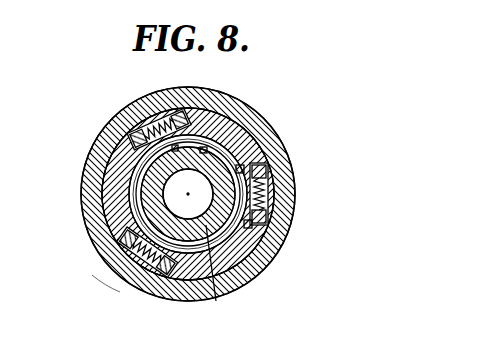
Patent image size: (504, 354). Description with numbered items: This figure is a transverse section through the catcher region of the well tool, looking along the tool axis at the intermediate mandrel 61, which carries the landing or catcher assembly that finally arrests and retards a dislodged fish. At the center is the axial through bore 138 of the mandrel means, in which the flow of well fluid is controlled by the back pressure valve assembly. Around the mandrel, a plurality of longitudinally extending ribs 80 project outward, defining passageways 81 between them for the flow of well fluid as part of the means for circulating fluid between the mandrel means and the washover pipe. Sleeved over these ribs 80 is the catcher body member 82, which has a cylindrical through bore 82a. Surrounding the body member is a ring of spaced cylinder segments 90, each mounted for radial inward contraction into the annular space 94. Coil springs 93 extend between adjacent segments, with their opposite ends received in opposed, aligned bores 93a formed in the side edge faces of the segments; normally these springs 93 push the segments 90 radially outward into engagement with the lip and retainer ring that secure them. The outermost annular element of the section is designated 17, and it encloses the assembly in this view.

The housing 17 is at (123, 270).
The intermediate mandrel 61 is at (205, 215).
The ribs 80 is at (140, 206).
The passageways 81 is at (130, 154).
The catcher body member 82 is at (165, 192).
The cylindrical through bore 82a is at (240, 118).
The cylinder segments 90 is at (252, 125).
The coil springs 93 is at (147, 125).
The bores 93a is at (170, 106).
The annular space 94 is at (253, 143).
The axial through bore 138 is at (148, 172).